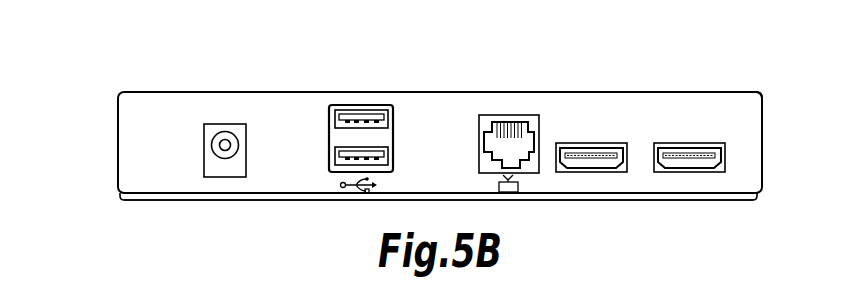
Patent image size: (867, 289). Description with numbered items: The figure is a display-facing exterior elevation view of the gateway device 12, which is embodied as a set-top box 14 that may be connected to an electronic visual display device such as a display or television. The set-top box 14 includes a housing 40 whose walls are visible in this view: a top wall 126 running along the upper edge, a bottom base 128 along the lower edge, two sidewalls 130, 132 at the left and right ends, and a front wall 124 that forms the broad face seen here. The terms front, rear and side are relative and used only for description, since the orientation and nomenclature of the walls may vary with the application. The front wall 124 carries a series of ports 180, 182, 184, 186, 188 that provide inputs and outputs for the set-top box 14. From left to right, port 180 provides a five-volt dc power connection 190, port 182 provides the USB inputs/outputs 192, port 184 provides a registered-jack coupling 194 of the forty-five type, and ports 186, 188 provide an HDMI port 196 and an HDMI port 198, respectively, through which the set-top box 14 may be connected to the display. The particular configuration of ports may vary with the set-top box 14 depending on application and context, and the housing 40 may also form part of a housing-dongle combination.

The gateway device 12 is at (142, 80).
The housing 40 is at (733, 89).
The top wall 126 is at (190, 92).
The sidewall 130 is at (117, 145).
The sidewall 132 is at (762, 143).
The front wall 124 is at (173, 194).
The set-top box 14 is at (130, 201).
The bottom base 128 is at (282, 201).
The port 180 is at (235, 130).
The 5V dc power connection 190 is at (220, 177).
The port 182 is at (360, 104).
The USB inputs/outputs 192 is at (342, 166).
The port 184 is at (513, 118).
The RJ-45 coupling 194 is at (528, 162).
The port 186 is at (590, 143).
The HDMI port 196 is at (620, 173).
The port 188 is at (688, 143).
The HDMI port 198 is at (719, 173).